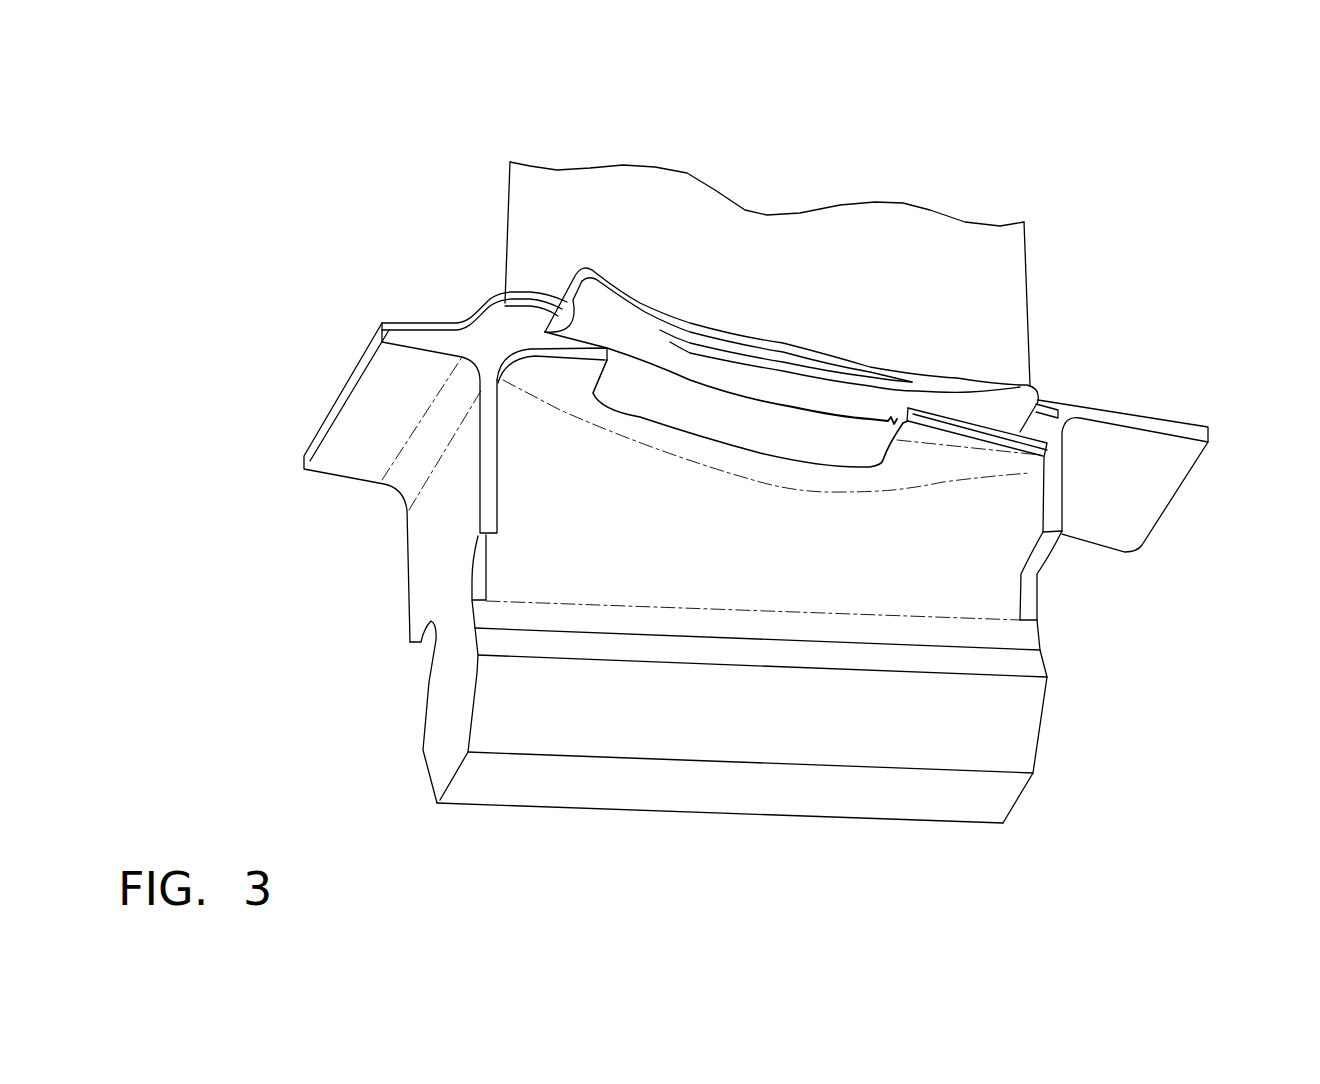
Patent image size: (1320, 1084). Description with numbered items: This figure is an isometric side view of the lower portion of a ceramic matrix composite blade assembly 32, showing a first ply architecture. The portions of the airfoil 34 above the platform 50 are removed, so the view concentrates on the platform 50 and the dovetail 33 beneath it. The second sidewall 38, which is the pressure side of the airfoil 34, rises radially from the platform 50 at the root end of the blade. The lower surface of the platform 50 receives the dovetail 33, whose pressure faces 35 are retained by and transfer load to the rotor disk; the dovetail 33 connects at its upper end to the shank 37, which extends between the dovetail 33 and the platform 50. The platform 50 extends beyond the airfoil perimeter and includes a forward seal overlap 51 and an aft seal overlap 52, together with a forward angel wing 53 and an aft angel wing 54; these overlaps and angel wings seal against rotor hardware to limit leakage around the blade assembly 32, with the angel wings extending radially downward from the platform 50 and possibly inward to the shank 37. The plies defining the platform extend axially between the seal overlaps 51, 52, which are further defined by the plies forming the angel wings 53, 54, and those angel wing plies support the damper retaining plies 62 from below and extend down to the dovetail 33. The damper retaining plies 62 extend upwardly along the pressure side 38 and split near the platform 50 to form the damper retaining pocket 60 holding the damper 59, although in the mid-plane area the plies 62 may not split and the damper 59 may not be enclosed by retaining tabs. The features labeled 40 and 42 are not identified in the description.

The blade assembly 32 is at (1105, 159).
The dovetail 33 is at (1052, 738).
The airfoil 34 is at (760, 232).
The pressure faces 35 is at (963, 662).
The shank 37 is at (782, 564).
The second sidewall 38 is at (805, 277).
The panel left edge 40 is at (503, 228).
The panel right edge 42 is at (1028, 304).
The platform 50 is at (1073, 390).
The forward seal overlap 51 is at (351, 355).
The aft seal overlap 52 is at (1189, 420).
The forward angel wing 53 is at (415, 654).
The aft angel wing 54 is at (1079, 512).
The damper 59 is at (582, 267).
The damper retaining pocket 60 is at (563, 300).
The damper retaining plies 62 is at (587, 362).